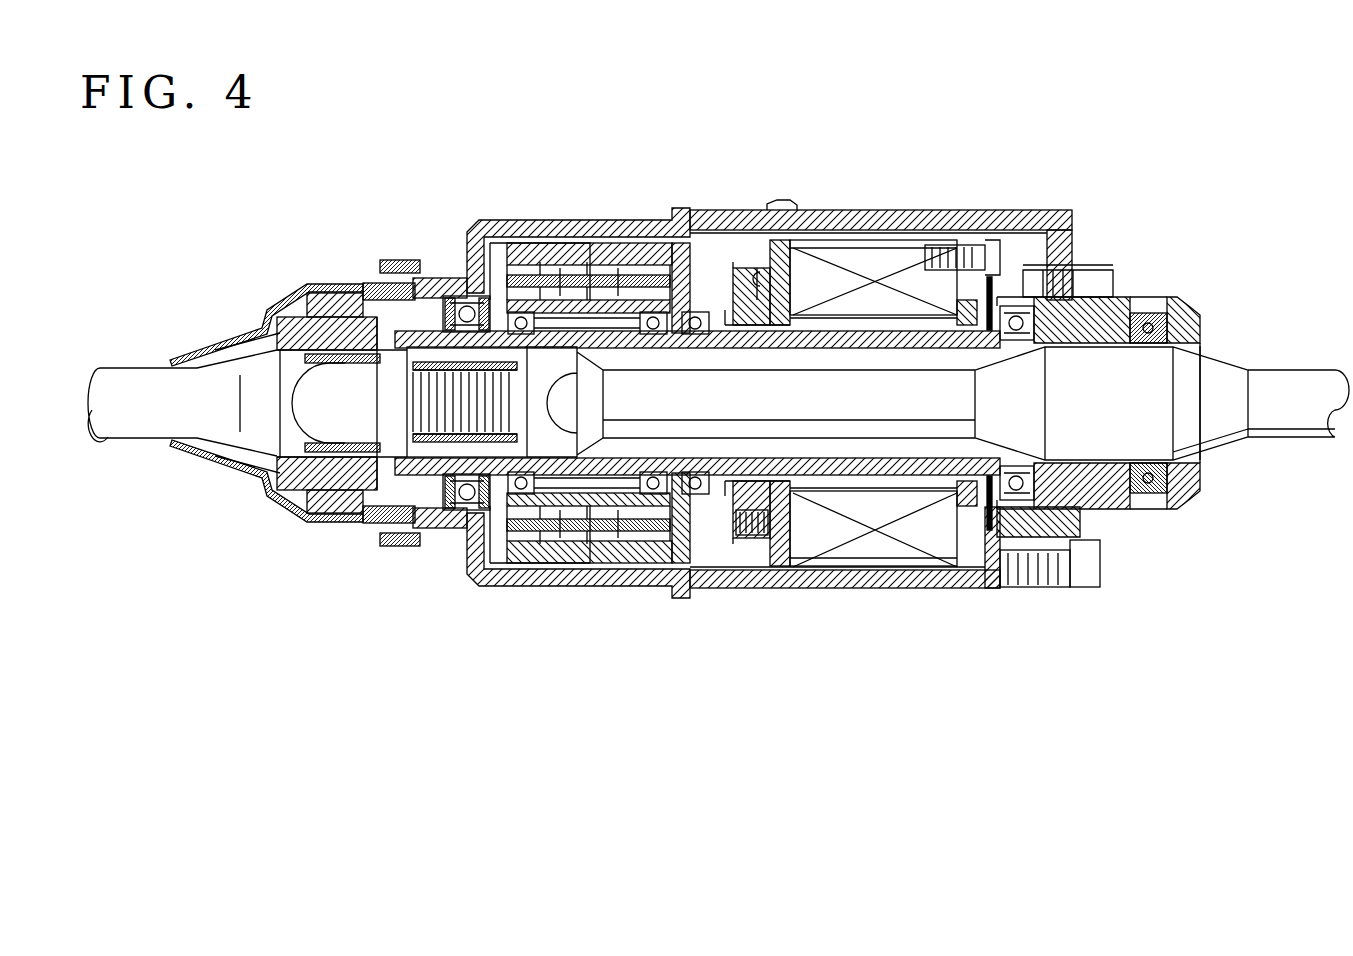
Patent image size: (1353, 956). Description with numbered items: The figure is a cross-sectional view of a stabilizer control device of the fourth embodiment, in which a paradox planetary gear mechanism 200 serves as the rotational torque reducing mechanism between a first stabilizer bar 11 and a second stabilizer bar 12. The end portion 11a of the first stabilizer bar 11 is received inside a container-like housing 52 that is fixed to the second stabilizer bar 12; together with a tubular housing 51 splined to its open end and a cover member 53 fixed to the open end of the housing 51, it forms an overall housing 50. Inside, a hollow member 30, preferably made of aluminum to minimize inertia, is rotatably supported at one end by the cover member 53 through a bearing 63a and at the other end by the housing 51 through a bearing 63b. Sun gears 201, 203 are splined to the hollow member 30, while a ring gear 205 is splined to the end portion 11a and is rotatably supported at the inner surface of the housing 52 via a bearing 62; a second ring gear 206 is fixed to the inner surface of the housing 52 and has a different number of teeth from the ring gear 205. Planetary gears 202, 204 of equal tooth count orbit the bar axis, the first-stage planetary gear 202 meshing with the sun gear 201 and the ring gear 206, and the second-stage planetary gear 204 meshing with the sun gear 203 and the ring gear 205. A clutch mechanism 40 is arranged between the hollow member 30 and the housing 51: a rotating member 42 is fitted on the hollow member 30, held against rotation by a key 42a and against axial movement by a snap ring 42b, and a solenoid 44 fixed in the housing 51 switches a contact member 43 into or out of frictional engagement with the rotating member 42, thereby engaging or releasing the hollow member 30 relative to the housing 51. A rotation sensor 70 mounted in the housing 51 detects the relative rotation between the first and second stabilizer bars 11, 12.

The first stabilizer bar 11 is at (1293, 364).
The end portion of the first stabilizer bar 11a is at (437, 447).
The second stabilizer bar 12 is at (133, 363).
The hollow member 30 is at (893, 475).
The clutch mechanism 40 is at (877, 596).
The rotating member 42 is at (748, 537).
The key 42a is at (757, 300).
The snap ring 42b is at (728, 300).
The contact member 43 is at (790, 240).
The solenoid 44 is at (840, 558).
The overall housing 50 is at (772, 204).
The tubular housing 51 is at (915, 222).
The housing 52 is at (460, 283).
The cover member 53 is at (1148, 300).
The bearing 62 is at (462, 506).
The bearing 63a is at (1015, 306).
The bearing 63b is at (697, 312).
The rotation sensor 70 is at (998, 252).
The paradox planetary gear mechanism 200 is at (590, 469).
The sun gear 201 is at (667, 562).
The planetary gear 202 is at (613, 538).
The sun gear 203 is at (540, 512).
The planetary gear 204 is at (567, 533).
The ring gear 205 is at (548, 522).
The ring gear 206 is at (688, 505).